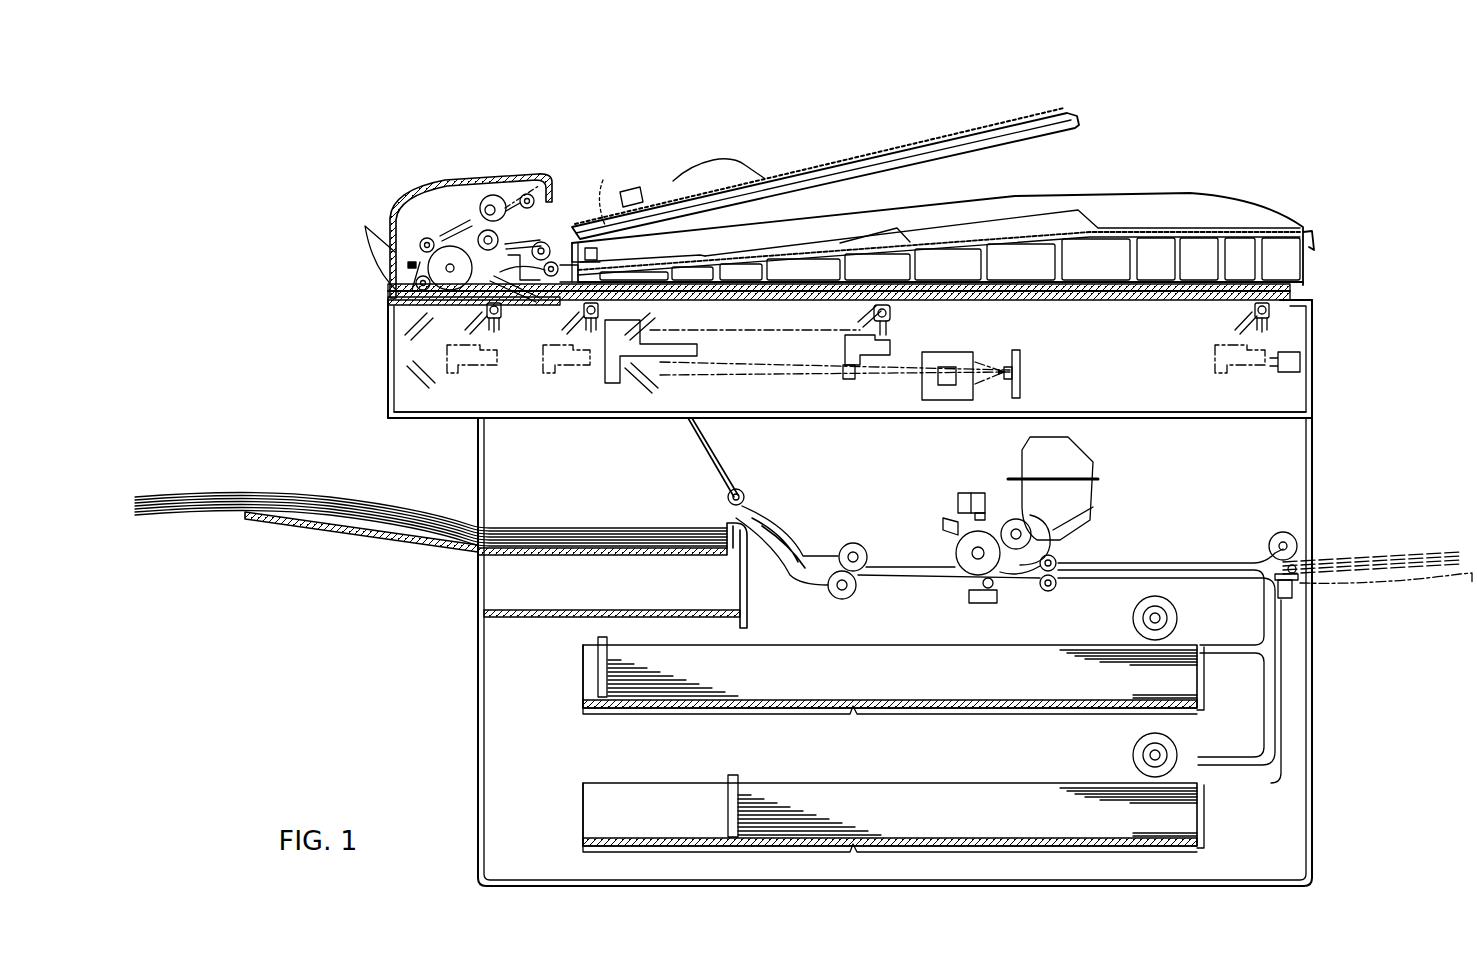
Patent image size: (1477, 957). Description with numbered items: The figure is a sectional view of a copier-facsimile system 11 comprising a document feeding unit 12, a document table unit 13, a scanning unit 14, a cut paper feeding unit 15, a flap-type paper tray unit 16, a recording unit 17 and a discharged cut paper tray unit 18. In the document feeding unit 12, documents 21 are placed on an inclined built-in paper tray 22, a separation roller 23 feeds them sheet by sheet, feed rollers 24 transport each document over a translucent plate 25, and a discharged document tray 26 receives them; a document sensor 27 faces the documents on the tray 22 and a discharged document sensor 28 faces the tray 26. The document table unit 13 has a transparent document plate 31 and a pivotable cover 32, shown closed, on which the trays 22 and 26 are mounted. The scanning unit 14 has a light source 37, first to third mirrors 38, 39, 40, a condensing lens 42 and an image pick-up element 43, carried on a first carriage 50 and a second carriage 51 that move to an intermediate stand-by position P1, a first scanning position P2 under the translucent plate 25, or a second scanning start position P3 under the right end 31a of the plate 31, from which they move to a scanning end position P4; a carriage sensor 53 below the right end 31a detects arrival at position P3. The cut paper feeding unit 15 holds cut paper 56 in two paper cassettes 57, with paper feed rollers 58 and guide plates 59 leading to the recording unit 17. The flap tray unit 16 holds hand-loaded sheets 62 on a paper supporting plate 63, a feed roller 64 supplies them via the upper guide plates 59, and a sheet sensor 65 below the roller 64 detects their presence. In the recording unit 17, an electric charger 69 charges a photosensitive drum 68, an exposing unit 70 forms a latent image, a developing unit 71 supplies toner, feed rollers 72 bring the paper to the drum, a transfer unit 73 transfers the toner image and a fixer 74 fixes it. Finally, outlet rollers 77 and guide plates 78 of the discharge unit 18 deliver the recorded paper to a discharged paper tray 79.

The copier-facsimile system 11 is at (1306, 452).
The document feeding unit 12 is at (466, 180).
The document table unit 13 is at (938, 262).
The scanning unit 14 is at (392, 320).
The cut paper feeding unit 15 is at (583, 735).
The flap-type paper tray unit 16 is at (1425, 535).
The recording unit 17 is at (945, 552).
The discharged cut paper tray unit 18 is at (340, 545).
The document 21 is at (965, 128).
The inclined built-in paper tray 22 is at (778, 175).
The separation roller 23 is at (490, 196).
The feed rollers 24 is at (420, 255).
The translucent plate 25 is at (490, 340).
The discharged document tray 26 is at (705, 262).
The document sensor 27 is at (612, 210).
The discharged document sensor 28 is at (583, 230).
The transparent document plate 31 is at (1168, 300).
The right end of document plate 31a is at (1312, 302).
The pivotable cover 32 is at (1305, 266).
The light source 37 is at (893, 322).
The first mirror 38 is at (845, 352).
The second mirror 39 is at (398, 328).
The third mirror 40 is at (405, 382).
The condensing lens 42 is at (945, 385).
The image pick-up element 43 is at (1010, 362).
The first carriage 50 is at (843, 368).
The second carriage 51 is at (655, 395).
The carriage sensor 53 is at (1300, 360).
The cut paper 56 is at (875, 668).
The paper cassettes 57 is at (583, 692).
The paper feed rollers 58 is at (1133, 640).
The guide plates 59 is at (1222, 578).
The sheets 62 is at (586, 527).
The paper supporting plate 63 is at (1395, 588).
The feed roller 64 is at (1285, 530).
The sheet sensor 65 is at (1288, 598).
The photosensitive drum 68 is at (935, 548).
The electric charger 69 is at (942, 515).
The exposing unit 70 is at (968, 492).
The developing unit 71 is at (1012, 518).
The feed rollers 72 is at (1058, 583).
The transfer unit 73 is at (980, 604).
The fixer 74 is at (832, 597).
The outlet rollers 77 is at (745, 505).
The guide plates 78 is at (798, 545).
The discharged paper tray 79 is at (628, 555).
The intermediate stand-by position P1 is at (843, 392).
The first scanning position P2 is at (445, 385).
The second scanning start position P3 is at (1220, 380).
The scanning end position P4 is at (545, 385).